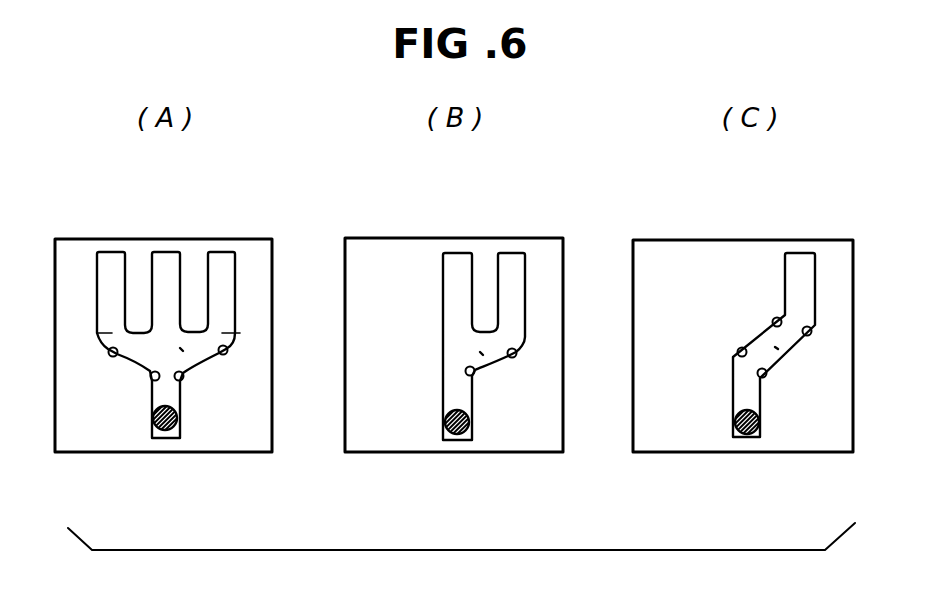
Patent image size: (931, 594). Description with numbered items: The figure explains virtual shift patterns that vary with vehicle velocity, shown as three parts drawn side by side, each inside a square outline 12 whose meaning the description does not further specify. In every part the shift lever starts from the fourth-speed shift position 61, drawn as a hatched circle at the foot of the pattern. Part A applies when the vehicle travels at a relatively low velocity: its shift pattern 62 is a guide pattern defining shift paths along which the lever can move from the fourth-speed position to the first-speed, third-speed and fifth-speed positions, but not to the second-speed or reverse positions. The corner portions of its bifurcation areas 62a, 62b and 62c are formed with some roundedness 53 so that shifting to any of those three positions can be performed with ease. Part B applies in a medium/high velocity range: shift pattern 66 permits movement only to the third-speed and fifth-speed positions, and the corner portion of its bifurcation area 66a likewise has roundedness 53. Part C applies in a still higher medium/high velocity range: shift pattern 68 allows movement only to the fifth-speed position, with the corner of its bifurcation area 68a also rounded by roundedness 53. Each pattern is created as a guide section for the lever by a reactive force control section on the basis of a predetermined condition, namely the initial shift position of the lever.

The substrate 12 is at (110, 239).
The roundedness 53 is at (181, 329).
The fourth-speed shift position 61 is at (164, 431).
The shift pattern 62 is at (248, 297).
The bifurcation area 62a is at (180, 348).
The bifurcation area 62b is at (240, 333).
The bifurcation area 62c is at (98, 333).
The shift pattern 66 is at (540, 284).
The bifurcation area 66a is at (480, 352).
The shift pattern 68 is at (830, 278).
The bifurcation area 68a is at (775, 347).